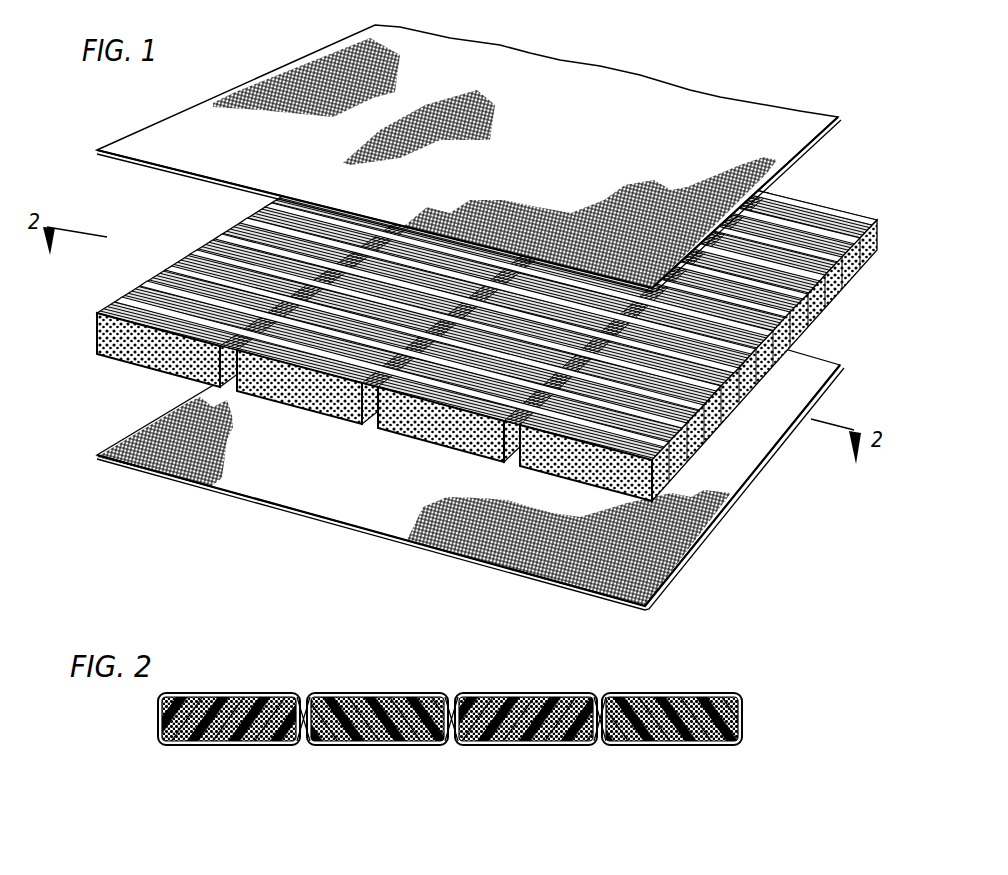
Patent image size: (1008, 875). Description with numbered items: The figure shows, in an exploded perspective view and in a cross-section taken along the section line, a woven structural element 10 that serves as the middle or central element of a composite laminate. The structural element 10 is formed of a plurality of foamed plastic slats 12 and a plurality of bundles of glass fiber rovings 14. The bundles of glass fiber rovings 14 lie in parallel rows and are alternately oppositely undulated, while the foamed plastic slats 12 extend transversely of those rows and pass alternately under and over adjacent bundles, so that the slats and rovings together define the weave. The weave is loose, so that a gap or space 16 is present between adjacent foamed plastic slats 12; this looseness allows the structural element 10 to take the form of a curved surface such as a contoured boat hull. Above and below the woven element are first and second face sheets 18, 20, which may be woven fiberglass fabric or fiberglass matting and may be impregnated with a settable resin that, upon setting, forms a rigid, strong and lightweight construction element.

In FIG. 1, the structural element 10 is at (462, 378).
In FIG. 2, the structural element 10 is at (506, 738).
In FIG. 2, the foamed plastic slat 12 is at (686, 733).
In FIG. 1, the bundle of glass fiber rovings 14 is at (866, 247).
In FIG. 2, the bundle of glass fiber rovings 14 is at (596, 697).
In FIG. 1, the space 16 is at (372, 430).
In FIG. 2, the space 16 is at (450, 744).
In FIG. 1, the first face sheet 18 is at (264, 103).
In FIG. 1, the second face sheet 20 is at (138, 462).